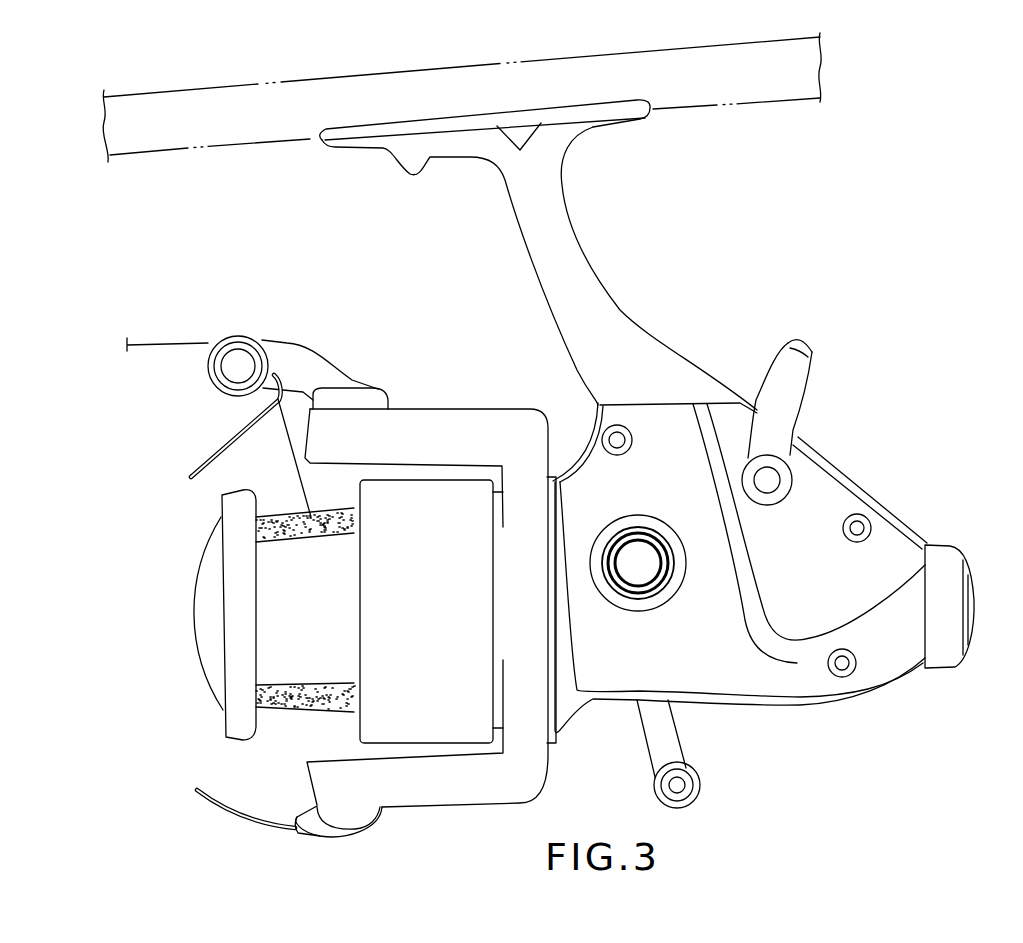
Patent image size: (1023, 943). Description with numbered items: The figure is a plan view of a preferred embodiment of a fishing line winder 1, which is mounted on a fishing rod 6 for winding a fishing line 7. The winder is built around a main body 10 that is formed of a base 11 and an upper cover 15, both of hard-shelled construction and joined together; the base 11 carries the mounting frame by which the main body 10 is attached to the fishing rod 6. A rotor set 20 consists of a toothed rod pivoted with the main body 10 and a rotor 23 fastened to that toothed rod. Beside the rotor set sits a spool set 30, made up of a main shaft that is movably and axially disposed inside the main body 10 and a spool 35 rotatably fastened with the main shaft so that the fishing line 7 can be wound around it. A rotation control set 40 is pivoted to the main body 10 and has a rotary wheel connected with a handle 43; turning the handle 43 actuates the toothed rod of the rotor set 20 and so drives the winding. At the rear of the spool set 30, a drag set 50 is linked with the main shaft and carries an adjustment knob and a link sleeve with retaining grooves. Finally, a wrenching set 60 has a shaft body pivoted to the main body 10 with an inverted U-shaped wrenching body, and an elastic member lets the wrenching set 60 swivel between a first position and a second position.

The fishing line winder 1 is at (770, 577).
The fishing rod 6 is at (772, 109).
The fishing line 7 is at (157, 338).
The main body 10 is at (896, 695).
The base 11 is at (628, 325).
The upper cover 15 is at (773, 683).
The rotor set 20 is at (481, 402).
The rotor 23 is at (445, 500).
The spool set 30 is at (191, 661).
The spool 35 is at (280, 577).
The rotation control set 40 is at (644, 760).
The handle 43 is at (643, 733).
The drag set 50 is at (957, 686).
The wrenching set 60 is at (809, 389).